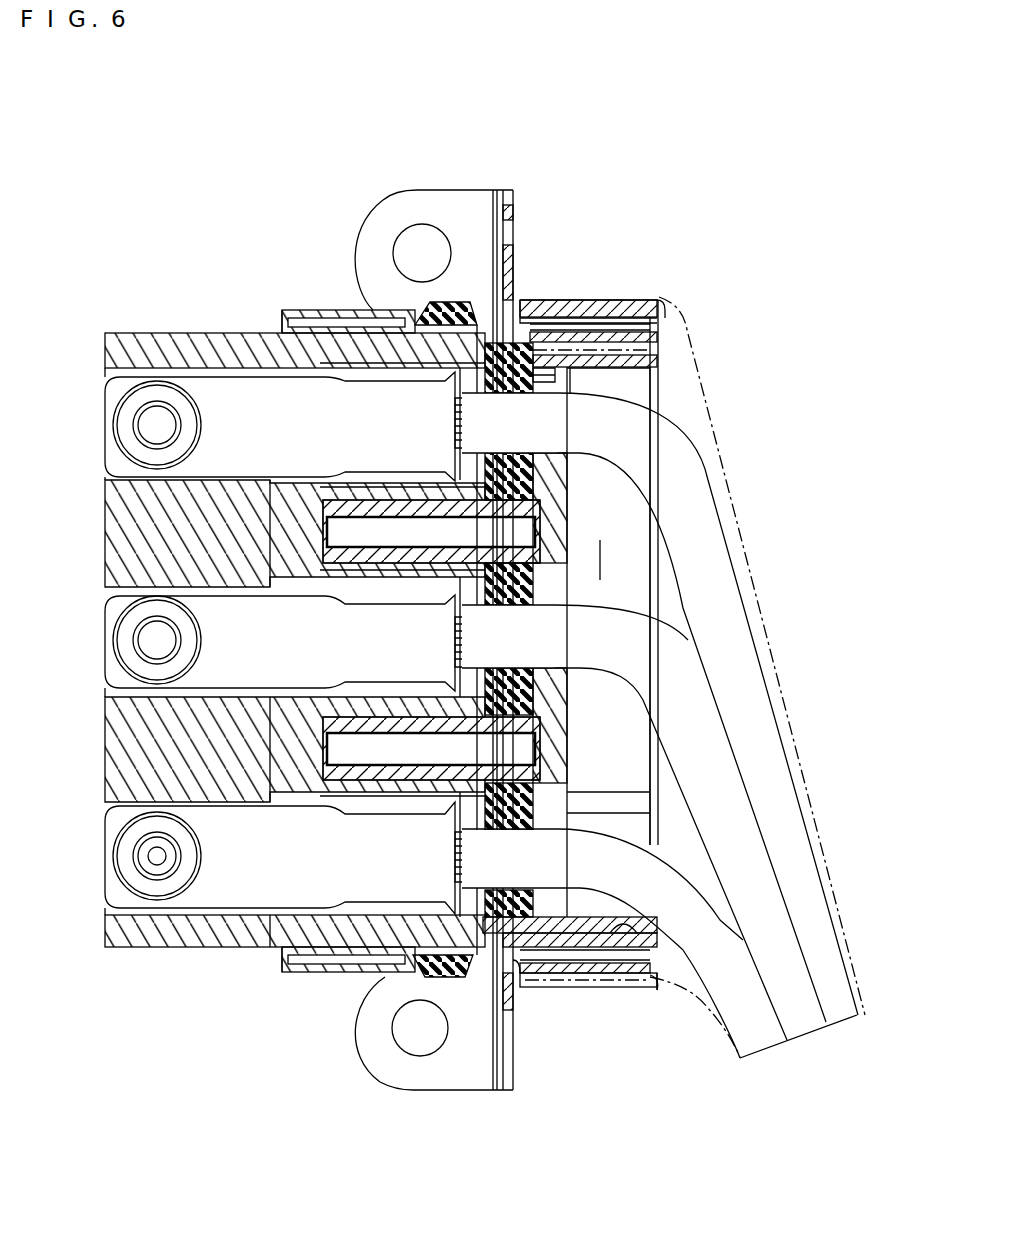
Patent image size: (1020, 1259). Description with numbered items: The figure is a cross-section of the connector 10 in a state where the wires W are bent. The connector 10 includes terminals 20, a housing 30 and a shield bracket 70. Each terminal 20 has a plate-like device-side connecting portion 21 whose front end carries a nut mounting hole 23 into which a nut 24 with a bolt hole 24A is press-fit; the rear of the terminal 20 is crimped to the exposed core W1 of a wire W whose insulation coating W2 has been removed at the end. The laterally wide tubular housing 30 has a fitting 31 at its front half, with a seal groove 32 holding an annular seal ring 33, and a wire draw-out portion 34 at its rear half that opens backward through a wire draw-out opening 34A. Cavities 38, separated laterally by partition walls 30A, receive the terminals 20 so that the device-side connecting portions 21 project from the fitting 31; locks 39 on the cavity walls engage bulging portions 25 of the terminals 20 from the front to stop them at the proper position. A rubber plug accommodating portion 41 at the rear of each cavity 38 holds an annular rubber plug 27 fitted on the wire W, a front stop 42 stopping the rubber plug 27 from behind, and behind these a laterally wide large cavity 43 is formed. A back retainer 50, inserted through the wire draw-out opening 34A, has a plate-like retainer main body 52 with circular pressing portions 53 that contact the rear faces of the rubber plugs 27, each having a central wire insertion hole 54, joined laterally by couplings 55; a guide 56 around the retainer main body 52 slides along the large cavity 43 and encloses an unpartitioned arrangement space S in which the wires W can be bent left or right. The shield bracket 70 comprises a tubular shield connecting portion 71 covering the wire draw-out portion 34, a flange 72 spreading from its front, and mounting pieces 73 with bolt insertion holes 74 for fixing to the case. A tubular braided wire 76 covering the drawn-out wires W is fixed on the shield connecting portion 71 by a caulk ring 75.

The connector 10 is at (613, 183).
The terminal 20 is at (97, 589).
The device-side connecting portion 21 is at (228, 405).
The nut mounting hole 23 is at (158, 393).
The nut 24 is at (122, 420).
The bolt hole 24A is at (153, 863).
The bulging portion 25 is at (293, 367).
The rubber plug 27 is at (533, 318).
The housing 30 is at (352, 982).
The partition wall 30A is at (390, 305).
The fitting 31 is at (272, 933).
The seal groove 32 is at (428, 977).
The seal ring 33 is at (462, 977).
The wire draw-out portion 34 is at (596, 957).
The wire draw-out opening 34A is at (704, 1003).
The cavity 38 is at (368, 353).
The lock 39 is at (263, 360).
The rubber plug accommodating portion 41 is at (548, 568).
The front stop 42 is at (460, 305).
The large cavity 43 is at (642, 922).
The back retainer 50 is at (640, 320).
The retainer main body 52 is at (575, 895).
The pressing portion 53 is at (562, 330).
The wire insertion hole 54 is at (565, 393).
The coupling 55 is at (547, 527).
The guide 56 is at (653, 983).
The shield bracket 70 is at (524, 192).
The shield connecting portion 71 is at (603, 300).
The flange 72 is at (505, 1085).
The mounting piece 73 is at (430, 197).
The bolt insertion hole 74 is at (420, 232).
The caulk ring 75 is at (573, 990).
The braided wire 76 is at (687, 330).
The arrangement space S is at (625, 551).
The wire W is at (784, 1049).
The core W1 is at (459, 318).
The insulation coating W2 is at (497, 190).